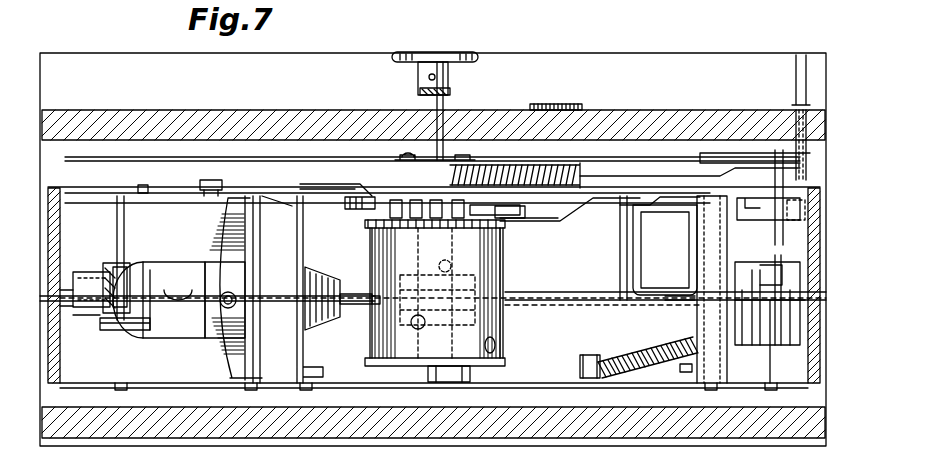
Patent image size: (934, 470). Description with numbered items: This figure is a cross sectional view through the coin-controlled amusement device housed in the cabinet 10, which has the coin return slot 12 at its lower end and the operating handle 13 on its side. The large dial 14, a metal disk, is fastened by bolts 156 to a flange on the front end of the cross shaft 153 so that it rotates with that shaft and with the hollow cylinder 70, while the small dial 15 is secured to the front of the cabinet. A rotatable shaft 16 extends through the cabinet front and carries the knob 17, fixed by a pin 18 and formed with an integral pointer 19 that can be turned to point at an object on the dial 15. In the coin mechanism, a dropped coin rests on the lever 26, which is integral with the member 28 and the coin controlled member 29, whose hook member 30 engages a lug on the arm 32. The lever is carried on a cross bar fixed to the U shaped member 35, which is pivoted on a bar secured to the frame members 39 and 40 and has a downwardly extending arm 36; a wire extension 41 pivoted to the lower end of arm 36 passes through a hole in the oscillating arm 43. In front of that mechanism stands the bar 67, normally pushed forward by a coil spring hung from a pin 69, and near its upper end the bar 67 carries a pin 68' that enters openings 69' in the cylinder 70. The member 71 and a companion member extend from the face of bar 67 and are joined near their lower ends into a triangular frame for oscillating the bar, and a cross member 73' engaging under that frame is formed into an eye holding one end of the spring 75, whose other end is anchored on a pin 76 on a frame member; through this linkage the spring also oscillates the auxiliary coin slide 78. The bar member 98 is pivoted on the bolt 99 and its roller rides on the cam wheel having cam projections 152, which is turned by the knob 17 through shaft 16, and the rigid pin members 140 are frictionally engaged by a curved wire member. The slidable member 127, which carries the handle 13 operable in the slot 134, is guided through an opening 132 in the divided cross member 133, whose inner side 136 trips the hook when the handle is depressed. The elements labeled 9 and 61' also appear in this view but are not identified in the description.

The cabinet 10 is at (590, 125).
The large dial 14 is at (171, 155).
The frame member 40 is at (172, 382).
The knob 17 is at (451, 54).
The pin 18 is at (427, 77).
The pointer 19 is at (447, 91).
The rotatable shaft 16 is at (447, 100).
The bolts 156 is at (470, 158).
The small dial 15 is at (544, 104).
The slot 134 is at (400, 154).
The coin return slot 12 is at (797, 80).
The bar member 98 is at (278, 192).
The frame member 39 is at (143, 187).
The bolt 99 is at (203, 181).
The oscillating arm 43 is at (352, 198).
The rigid pin members 140 is at (486, 209).
The cam projections 152 is at (510, 213).
The wire extension 41 is at (565, 223).
The downwardly extending arm 36 is at (625, 214).
The cross member 73' is at (607, 248).
The coin controlled member 29 is at (661, 213).
The member 28 is at (642, 258).
The lever 26 is at (672, 295).
The U shaped member 35 is at (718, 252).
The hook member 30 is at (736, 216).
The arm 32 is at (778, 218).
The hollow cylinder 70 is at (470, 255).
The pin 61' is at (432, 330).
The pin 69 is at (510, 345).
The cross shaft 153 is at (444, 383).
The pin 68' is at (356, 280).
The bar 67 is at (329, 311).
The openings 69' is at (362, 314).
The pin 76 is at (582, 357).
The spring 75 is at (612, 357).
The shaft 9 is at (434, 299).
The operating handle 13 is at (76, 317).
The divided cross member 133 is at (125, 222).
The opening 132 is at (108, 264).
The slidable member 127 is at (131, 268).
The inner side 136 is at (150, 282).
The member 71 is at (765, 364).
The auxiliary coin slide 78 is at (777, 345).